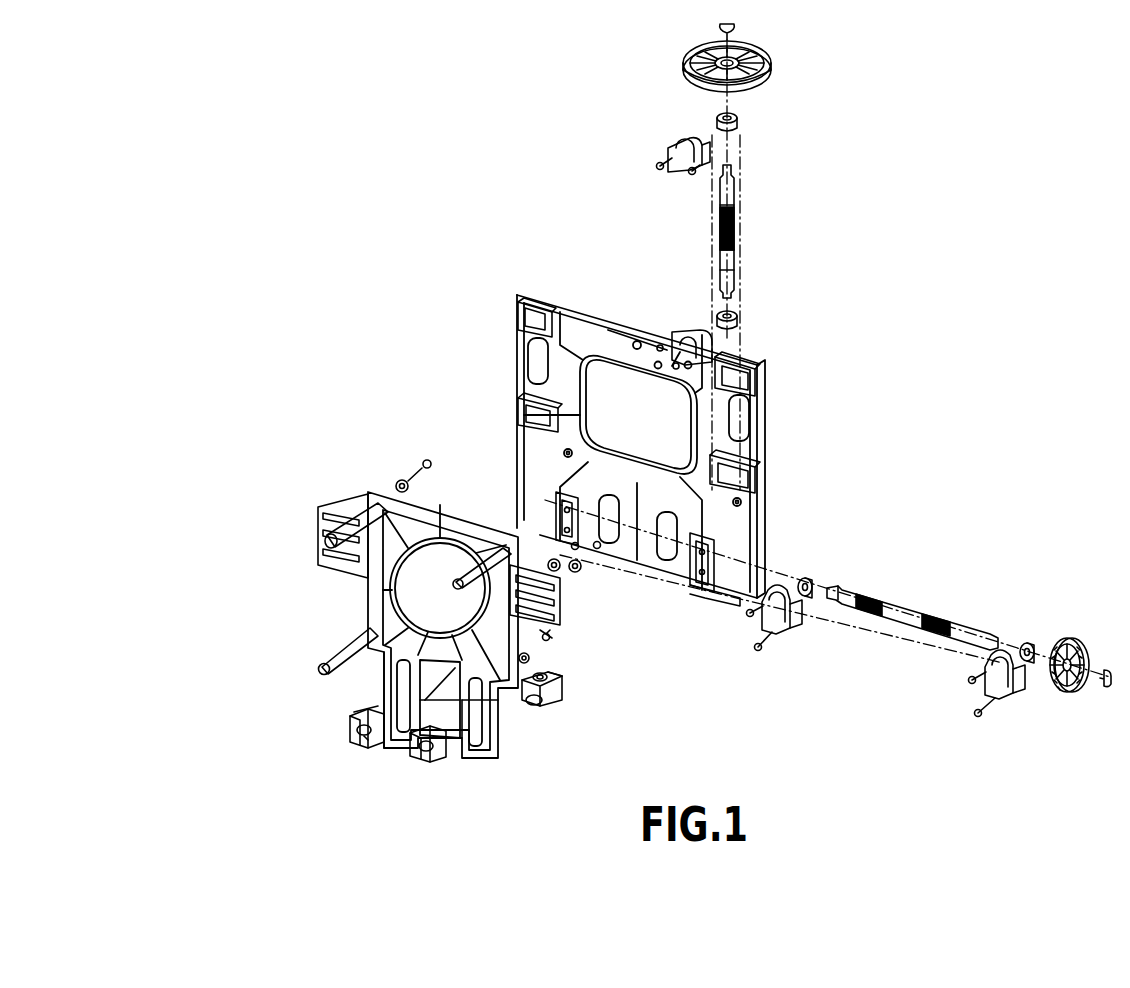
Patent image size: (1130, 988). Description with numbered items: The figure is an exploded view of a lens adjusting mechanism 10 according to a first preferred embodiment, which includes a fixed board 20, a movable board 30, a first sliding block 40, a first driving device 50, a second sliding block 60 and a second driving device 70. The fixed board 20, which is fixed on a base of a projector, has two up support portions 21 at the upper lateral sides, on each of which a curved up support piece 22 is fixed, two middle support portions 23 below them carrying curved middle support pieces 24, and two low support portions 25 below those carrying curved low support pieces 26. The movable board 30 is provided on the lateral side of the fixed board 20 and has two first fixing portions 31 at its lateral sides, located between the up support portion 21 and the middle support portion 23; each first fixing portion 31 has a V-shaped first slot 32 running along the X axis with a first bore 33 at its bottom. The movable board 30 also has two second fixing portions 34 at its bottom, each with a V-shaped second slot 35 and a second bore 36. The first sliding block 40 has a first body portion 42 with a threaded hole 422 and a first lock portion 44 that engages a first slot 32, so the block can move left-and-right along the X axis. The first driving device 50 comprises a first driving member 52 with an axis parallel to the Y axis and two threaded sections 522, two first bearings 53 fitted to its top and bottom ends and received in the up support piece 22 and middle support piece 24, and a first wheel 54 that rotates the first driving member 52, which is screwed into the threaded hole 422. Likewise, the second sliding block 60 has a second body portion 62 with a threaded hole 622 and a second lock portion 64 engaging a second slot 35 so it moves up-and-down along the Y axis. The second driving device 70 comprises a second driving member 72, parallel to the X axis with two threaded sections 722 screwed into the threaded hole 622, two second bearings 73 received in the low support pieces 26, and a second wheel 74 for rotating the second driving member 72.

The lens adjusting mechanism 10 is at (355, 228).
The fixed board 20 is at (583, 303).
The up support portion 21 is at (520, 310).
The up support piece 22 is at (676, 156).
The middle support portion 23 is at (520, 410).
The middle support piece 24 is at (682, 342).
The low support piece 25 is at (597, 548).
The low support piece 26 is at (773, 628).
The movable board 30 is at (380, 487).
The first fixing portion 31 is at (330, 510).
The first slot 32 is at (326, 540).
The first bore 33 is at (535, 590).
The second fixing portion 34 is at (392, 705).
The second slot 35 is at (400, 667).
The second bore 36 is at (467, 713).
The first sliding block 40 is at (575, 712).
The first body portion 42 is at (535, 692).
The first lock portion 44 is at (548, 690).
The threaded hole 422 is at (550, 674).
The first driving device 50 is at (778, 257).
The first driving member 52 is at (784, 230).
The threaded section 522 is at (735, 226).
The first bearing 53 is at (738, 122).
The first wheel 54 is at (757, 80).
The second sliding block 60 is at (434, 764).
The second body portion 62 is at (334, 741).
The second lock portion 64 is at (370, 713).
The threaded hole 622 is at (373, 733).
The second driving device 70 is at (831, 586).
The second driving member 72 is at (930, 580).
The threaded section 722 is at (868, 598).
The second bearing 73 is at (806, 580).
The second wheel 74 is at (1074, 658).